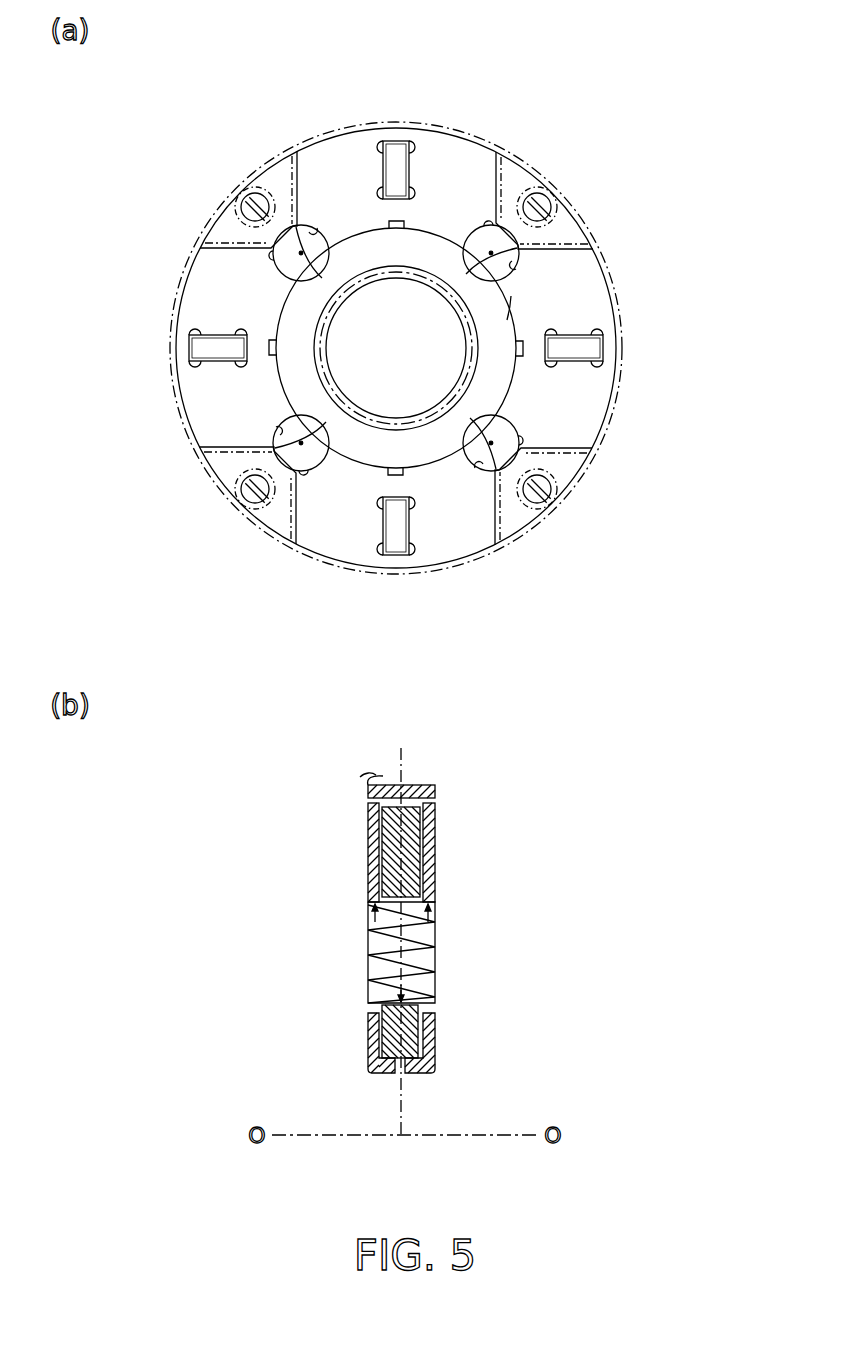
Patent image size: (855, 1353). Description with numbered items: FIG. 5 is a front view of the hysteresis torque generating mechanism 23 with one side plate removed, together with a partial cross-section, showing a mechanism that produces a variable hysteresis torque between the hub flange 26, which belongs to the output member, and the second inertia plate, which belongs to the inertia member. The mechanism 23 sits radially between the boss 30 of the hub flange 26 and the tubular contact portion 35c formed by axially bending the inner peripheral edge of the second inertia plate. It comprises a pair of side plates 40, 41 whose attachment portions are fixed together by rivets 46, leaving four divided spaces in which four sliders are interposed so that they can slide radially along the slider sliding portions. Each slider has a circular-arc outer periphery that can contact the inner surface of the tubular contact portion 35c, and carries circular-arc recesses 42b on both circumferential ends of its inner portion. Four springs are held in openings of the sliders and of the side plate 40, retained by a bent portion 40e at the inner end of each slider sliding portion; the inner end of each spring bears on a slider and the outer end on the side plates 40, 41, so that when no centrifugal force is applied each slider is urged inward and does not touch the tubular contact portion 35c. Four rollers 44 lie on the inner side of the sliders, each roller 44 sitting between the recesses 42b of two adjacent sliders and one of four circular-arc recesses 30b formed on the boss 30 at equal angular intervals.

The hysteresis torque generating mechanism 23 is at (485, 90).
The hub flange 26 is at (518, 309).
The boss 30 is at (492, 388).
The circular-arc recess 30b is at (287, 243).
The tubular contact portion 35c is at (432, 783).
The side plate 40 is at (372, 817).
The bent portion 40e is at (392, 1066).
The side plate 41 is at (427, 817).
The circular-arc recess 42b is at (292, 247).
The roller 44 is at (283, 247).
The rivet 46 is at (548, 197).